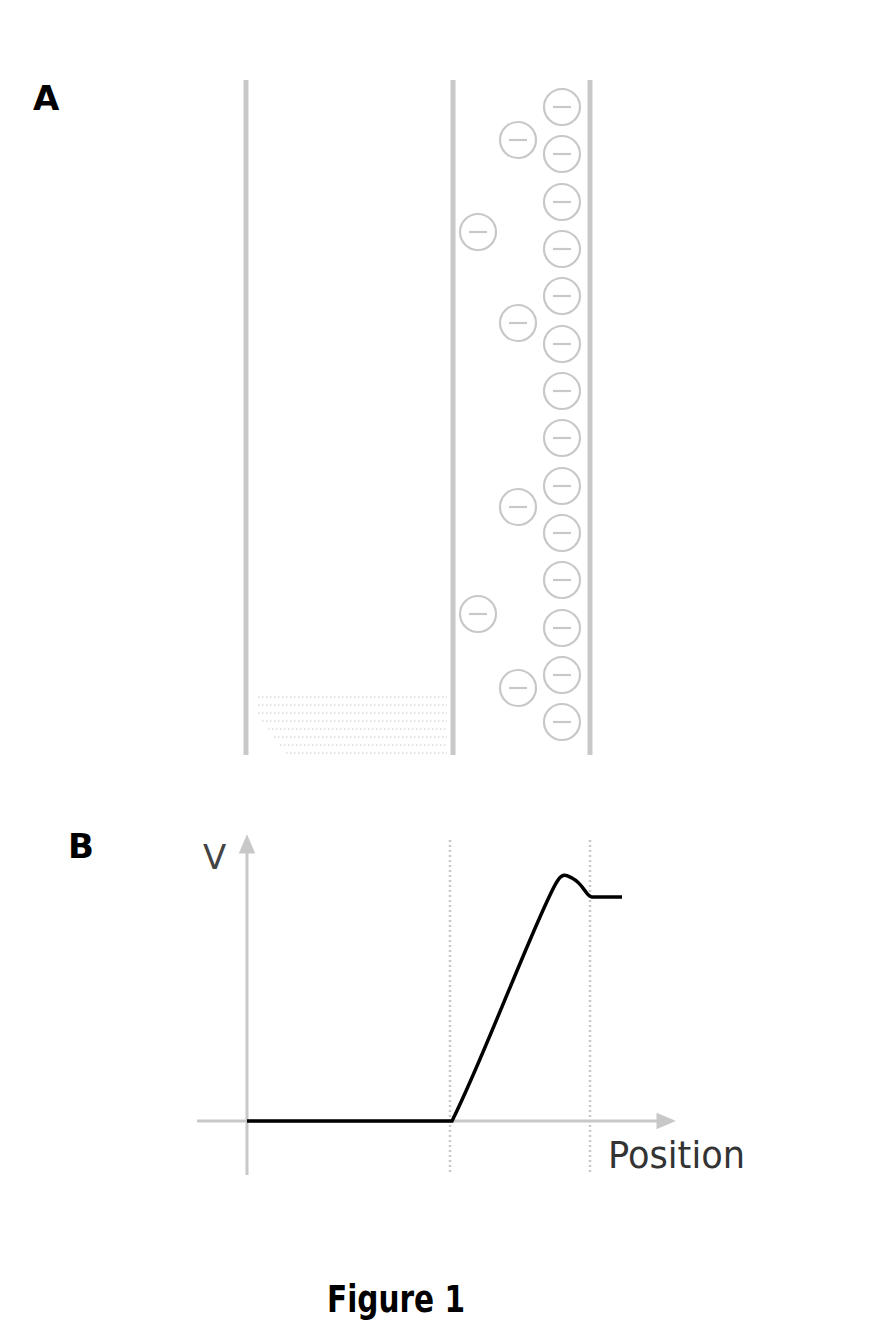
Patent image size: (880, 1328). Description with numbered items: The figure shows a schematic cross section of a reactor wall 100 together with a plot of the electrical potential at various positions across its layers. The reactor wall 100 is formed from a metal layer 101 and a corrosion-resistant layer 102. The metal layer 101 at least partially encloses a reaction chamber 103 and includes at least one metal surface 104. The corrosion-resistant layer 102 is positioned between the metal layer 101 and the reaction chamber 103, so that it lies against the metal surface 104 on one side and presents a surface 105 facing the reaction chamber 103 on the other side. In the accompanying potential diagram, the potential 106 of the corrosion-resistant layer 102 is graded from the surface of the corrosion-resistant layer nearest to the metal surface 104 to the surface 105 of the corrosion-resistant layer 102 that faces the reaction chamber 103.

In FIG. 1A, the reactor wall 100 is at (222, 80).
In FIG. 1A, the metal layer 101 is at (327, 88).
In FIG. 1A, the corrosion-resistant layer 102 is at (523, 85).
In FIG. 1A, the reaction chamber 103 is at (713, 443).
In FIG. 1A, the metal surface 104 is at (453, 85).
In FIG. 1A, the surface of the corrosion-resistant layer 105 is at (590, 297).
In FIG. 1B, the potential 106 is at (510, 983).